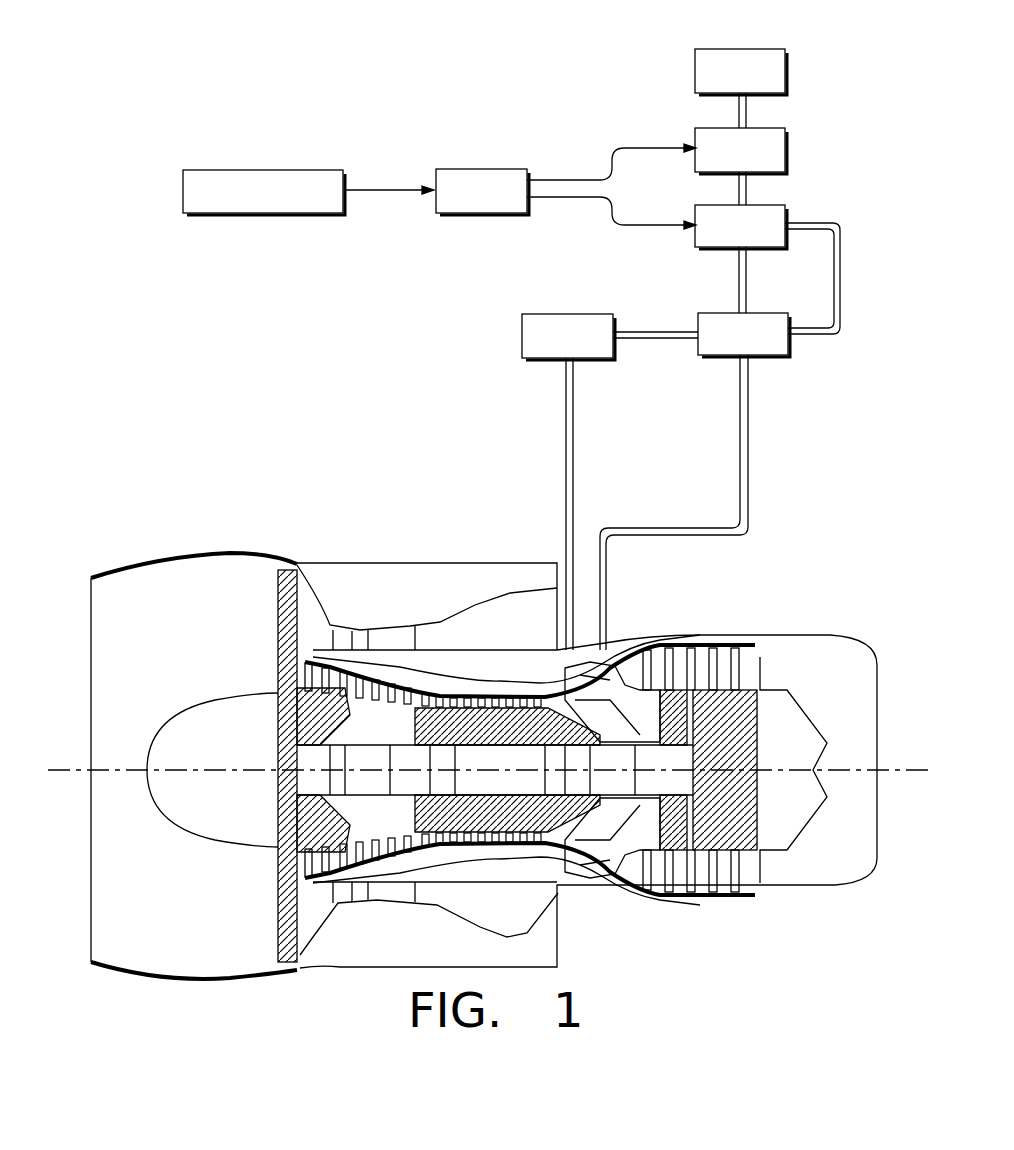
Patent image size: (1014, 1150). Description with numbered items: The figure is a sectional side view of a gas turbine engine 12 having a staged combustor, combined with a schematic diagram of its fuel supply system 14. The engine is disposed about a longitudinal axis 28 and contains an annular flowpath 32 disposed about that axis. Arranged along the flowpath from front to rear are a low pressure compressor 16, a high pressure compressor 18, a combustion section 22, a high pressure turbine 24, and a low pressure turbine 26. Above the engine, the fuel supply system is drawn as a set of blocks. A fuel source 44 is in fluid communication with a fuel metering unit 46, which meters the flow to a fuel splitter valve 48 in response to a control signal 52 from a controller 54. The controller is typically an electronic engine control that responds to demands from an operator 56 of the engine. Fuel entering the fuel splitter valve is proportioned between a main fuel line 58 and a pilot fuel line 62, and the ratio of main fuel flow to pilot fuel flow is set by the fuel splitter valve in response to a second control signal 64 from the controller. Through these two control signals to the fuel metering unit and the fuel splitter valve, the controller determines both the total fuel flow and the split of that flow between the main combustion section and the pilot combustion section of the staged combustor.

The gas turbine engine 12 is at (284, 486).
The fuel supply system 14 is at (717, 331).
The low pressure compressor 16 is at (372, 852).
The high pressure compressor 18 is at (470, 832).
The combustion section 22 is at (585, 845).
The high pressure turbine 24 is at (655, 855).
The low pressure turbine 26 is at (735, 882).
The longitudinal axis 28 is at (62, 773).
The annular flowpath 32 is at (402, 842).
The fuel source 44 is at (748, 49).
The fuel metering unit 46 is at (776, 128).
The fuel splitter valve 48 is at (776, 205).
The control signal 52 is at (648, 148).
The controller 54 is at (493, 169).
The operator 56 is at (300, 170).
The main fuel line 58 is at (739, 270).
The pilot fuel line 62 is at (811, 278).
The second control signal 64 is at (645, 225).